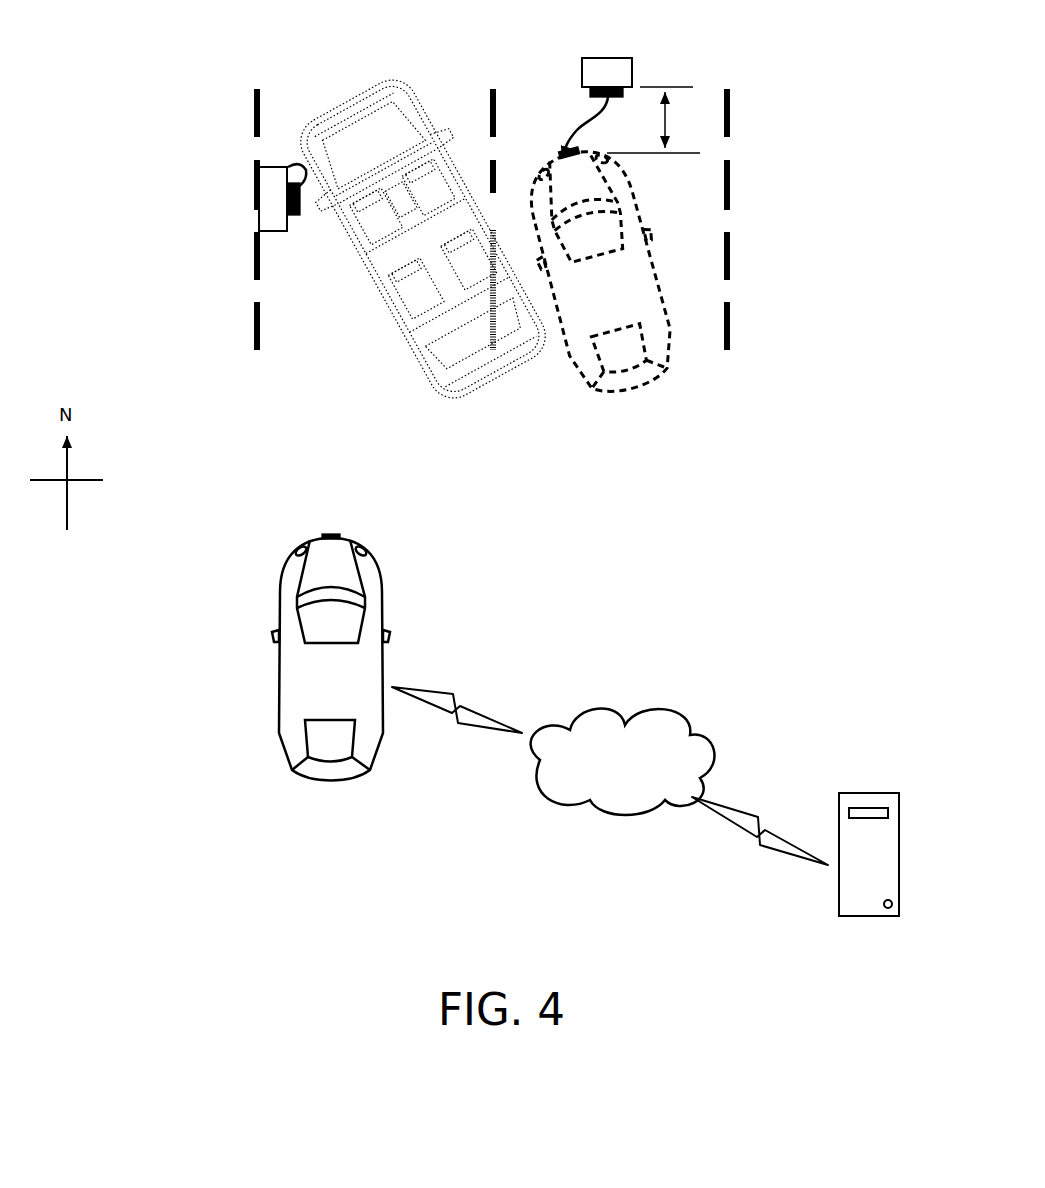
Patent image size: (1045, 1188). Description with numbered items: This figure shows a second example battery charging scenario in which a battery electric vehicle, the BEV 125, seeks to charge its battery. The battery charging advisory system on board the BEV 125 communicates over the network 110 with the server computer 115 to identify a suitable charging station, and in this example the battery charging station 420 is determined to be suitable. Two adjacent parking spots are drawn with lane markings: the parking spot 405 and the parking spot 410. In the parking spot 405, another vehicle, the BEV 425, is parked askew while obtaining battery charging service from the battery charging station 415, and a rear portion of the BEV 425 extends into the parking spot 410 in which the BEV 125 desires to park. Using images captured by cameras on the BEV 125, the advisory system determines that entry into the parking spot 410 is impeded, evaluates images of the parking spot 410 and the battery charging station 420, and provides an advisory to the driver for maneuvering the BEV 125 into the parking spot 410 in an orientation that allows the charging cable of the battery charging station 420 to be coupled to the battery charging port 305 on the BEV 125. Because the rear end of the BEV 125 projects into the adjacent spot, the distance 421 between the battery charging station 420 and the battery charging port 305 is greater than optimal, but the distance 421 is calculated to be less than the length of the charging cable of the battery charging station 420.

The parking spot 405 is at (296, 42).
The parking spot 410 is at (525, 42).
The battery charging station 415 is at (276, 231).
The battery charging station 420 is at (608, 57).
The distance 421 is at (653, 120).
The BEV 425 is at (512, 408).
The BEV 125 is at (692, 367).
The battery charging port 305 is at (564, 152).
The network 110 is at (623, 762).
The server computer 115 is at (899, 856).